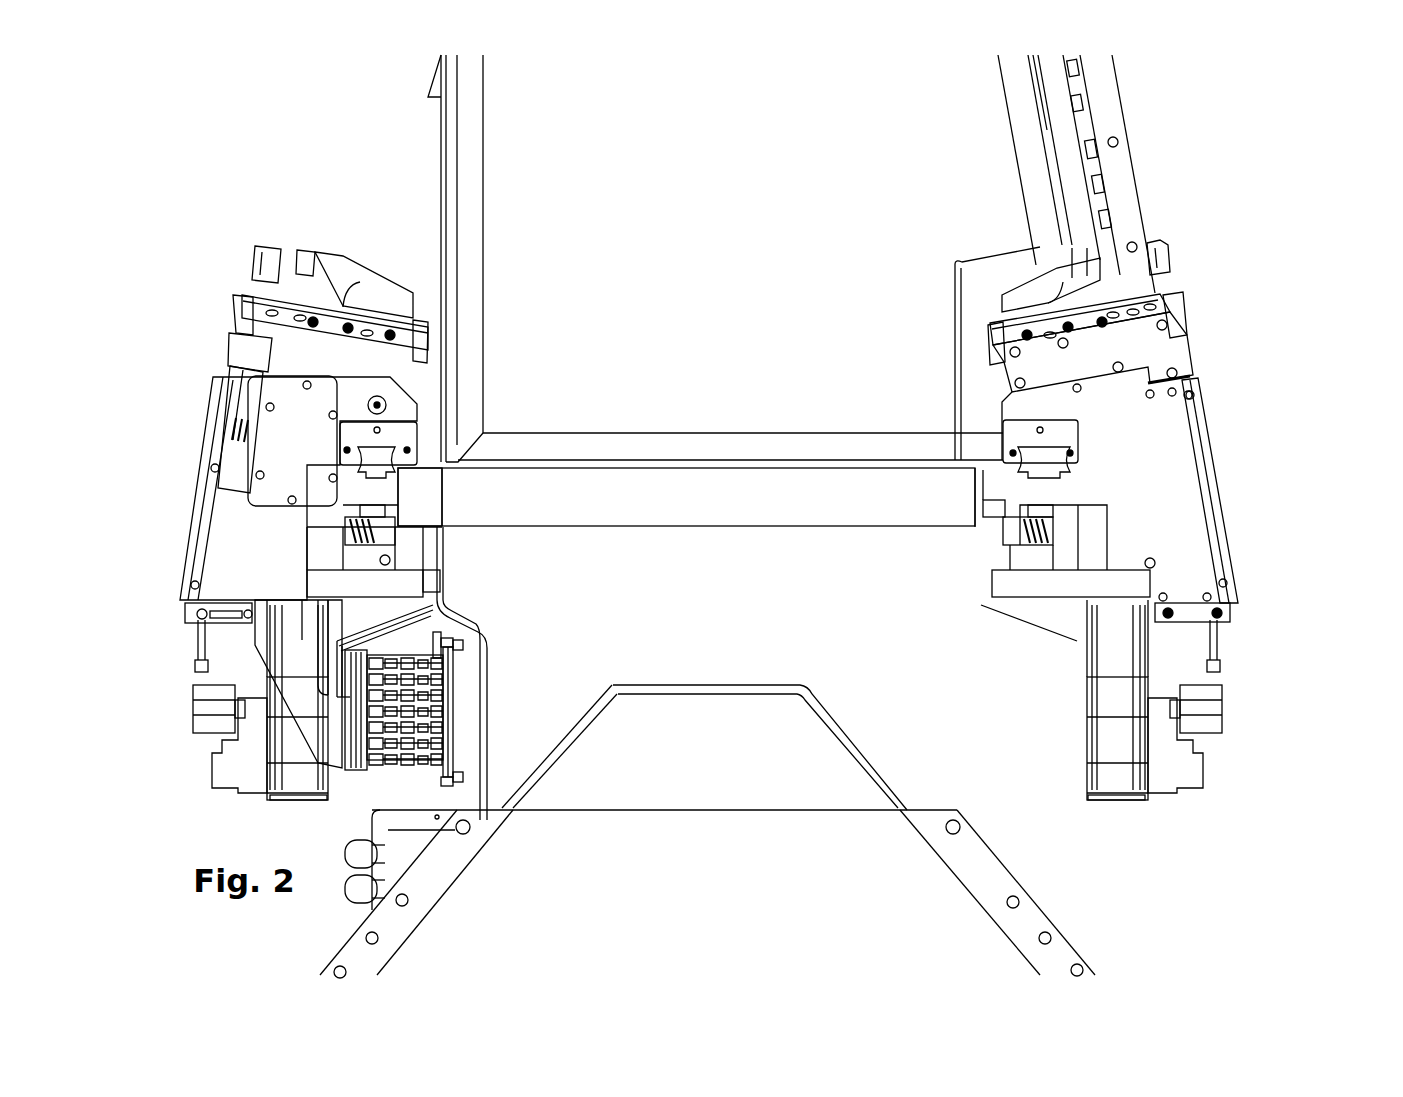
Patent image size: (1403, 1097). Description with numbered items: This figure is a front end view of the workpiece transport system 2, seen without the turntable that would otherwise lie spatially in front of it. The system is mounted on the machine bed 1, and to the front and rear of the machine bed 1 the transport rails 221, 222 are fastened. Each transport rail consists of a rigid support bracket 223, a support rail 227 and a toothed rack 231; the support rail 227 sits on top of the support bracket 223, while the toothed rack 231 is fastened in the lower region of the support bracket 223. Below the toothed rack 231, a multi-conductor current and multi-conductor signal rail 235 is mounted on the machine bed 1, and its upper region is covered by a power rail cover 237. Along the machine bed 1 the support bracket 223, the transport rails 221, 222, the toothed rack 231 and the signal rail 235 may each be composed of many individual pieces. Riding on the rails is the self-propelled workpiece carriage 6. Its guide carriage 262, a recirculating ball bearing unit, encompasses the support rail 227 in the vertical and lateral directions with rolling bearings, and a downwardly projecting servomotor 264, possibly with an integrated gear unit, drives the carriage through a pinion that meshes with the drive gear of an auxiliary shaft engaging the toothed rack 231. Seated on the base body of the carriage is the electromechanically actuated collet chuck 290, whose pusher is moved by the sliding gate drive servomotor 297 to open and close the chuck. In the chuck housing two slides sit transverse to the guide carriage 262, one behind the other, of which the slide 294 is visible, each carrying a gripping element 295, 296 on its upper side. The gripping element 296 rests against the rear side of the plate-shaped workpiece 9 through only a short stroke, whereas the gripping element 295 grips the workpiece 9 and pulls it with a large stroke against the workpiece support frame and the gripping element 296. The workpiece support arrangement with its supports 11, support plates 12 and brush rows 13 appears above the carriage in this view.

The machine bed 1 is at (888, 892).
The workpiece transport system 2 is at (470, 570).
The workpiece carriage 6 is at (1243, 460).
The workpiece 9 is at (1130, 220).
The supports 11 is at (470, 175).
The support plates 12 is at (1062, 120).
The brush rows 13 is at (1093, 195).
The transport rail 221 is at (962, 477).
The transport rail 222 is at (460, 477).
The support bracket 223 is at (995, 498).
The support rail 227 is at (1040, 459).
The toothed rack 231 is at (1015, 532).
The multi-conductor current and multi-conductor signal rail 235 is at (470, 681).
The power rail cover 237 is at (1002, 615).
The guide carriage 262 is at (1017, 435).
The servomotor 264 is at (1127, 660).
The collet chuck 290 is at (1200, 330).
The slide 294 is at (1000, 345).
The gripping element 295 is at (1163, 260).
The gripping element 296 is at (1015, 305).
The servomotor 297 is at (248, 363).